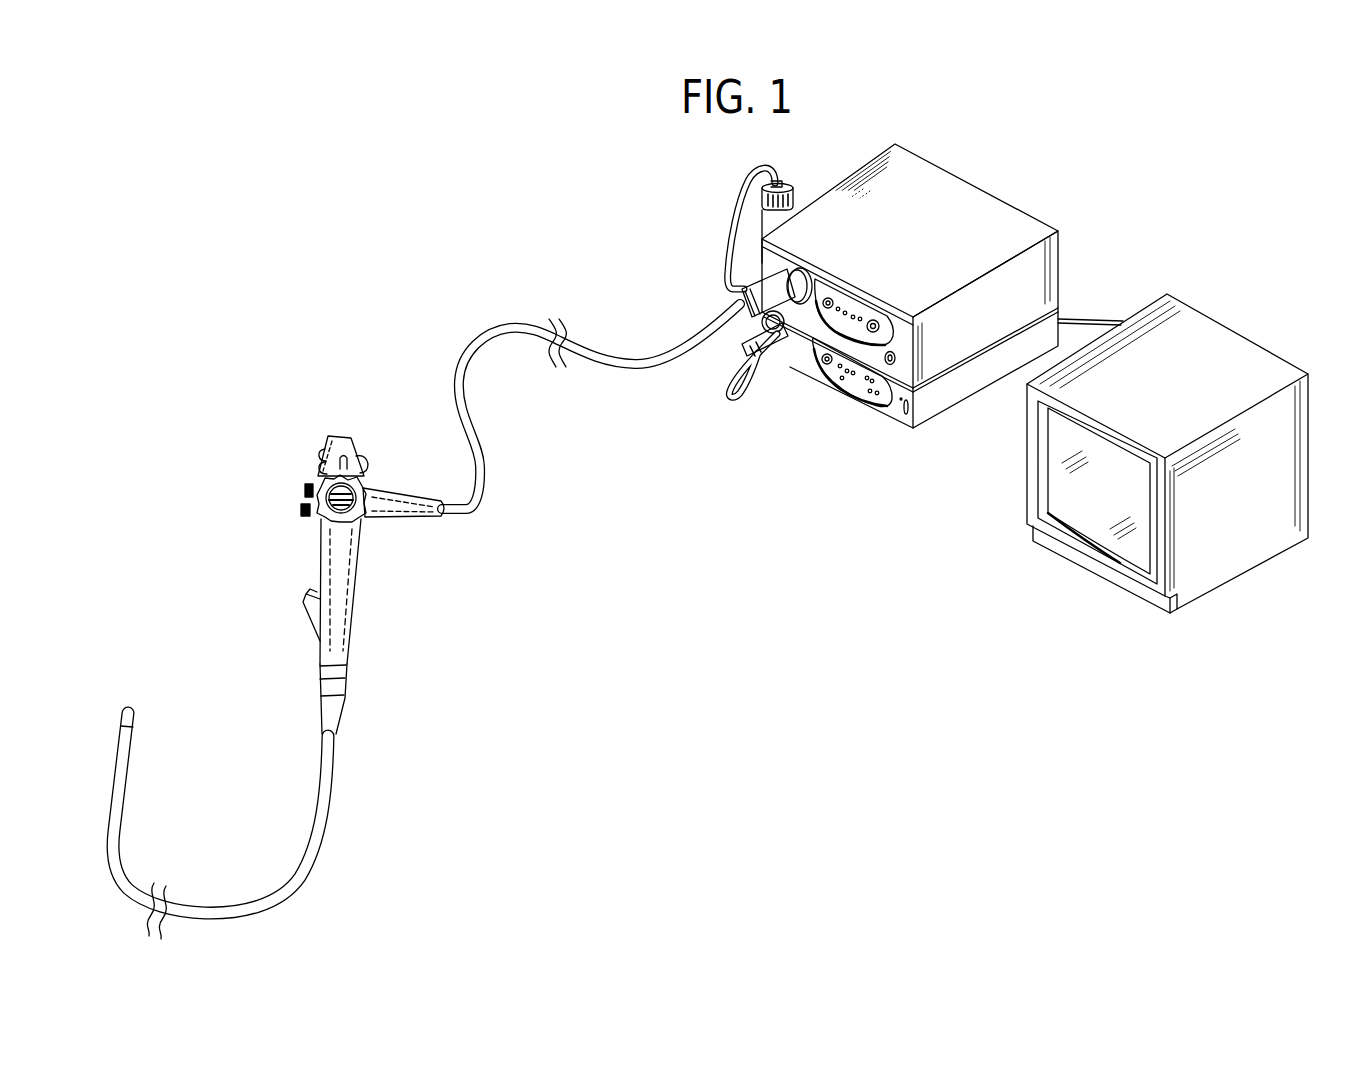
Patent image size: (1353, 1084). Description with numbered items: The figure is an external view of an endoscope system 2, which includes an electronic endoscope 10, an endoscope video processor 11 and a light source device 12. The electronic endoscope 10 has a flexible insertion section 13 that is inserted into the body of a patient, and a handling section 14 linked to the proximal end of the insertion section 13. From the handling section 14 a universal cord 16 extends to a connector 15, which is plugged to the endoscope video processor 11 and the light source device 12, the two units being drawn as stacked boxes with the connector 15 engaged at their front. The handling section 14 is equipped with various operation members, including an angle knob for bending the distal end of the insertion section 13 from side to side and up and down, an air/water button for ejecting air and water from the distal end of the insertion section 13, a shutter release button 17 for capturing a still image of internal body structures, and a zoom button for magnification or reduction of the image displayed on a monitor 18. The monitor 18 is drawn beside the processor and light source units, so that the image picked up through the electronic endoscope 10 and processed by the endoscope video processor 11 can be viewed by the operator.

The endoscope system 2 is at (858, 744).
The electronic endoscope 10 is at (336, 418).
The endoscope video processor 11 is at (942, 306).
The light source device 12 is at (970, 209).
The insertion section 13 is at (298, 890).
The handling section 14 is at (352, 542).
The connector 15 is at (727, 317).
The universal cord 16 is at (477, 420).
The shutter release button 17 is at (320, 465).
The monitor 18 is at (1210, 343).